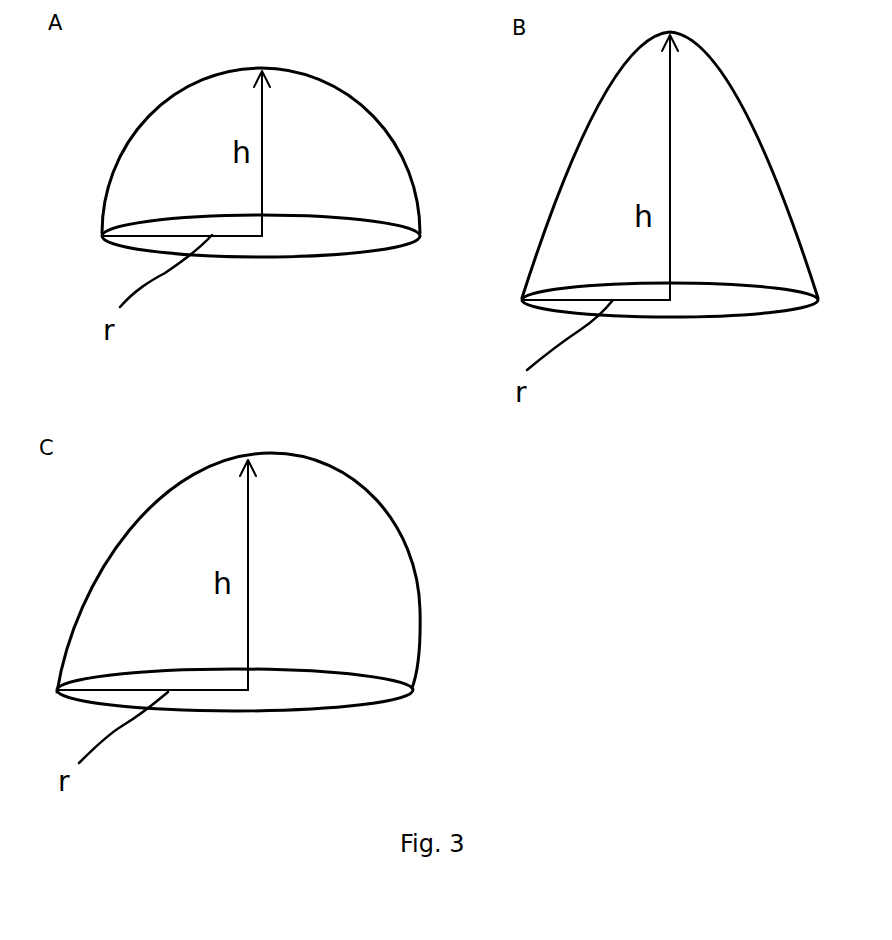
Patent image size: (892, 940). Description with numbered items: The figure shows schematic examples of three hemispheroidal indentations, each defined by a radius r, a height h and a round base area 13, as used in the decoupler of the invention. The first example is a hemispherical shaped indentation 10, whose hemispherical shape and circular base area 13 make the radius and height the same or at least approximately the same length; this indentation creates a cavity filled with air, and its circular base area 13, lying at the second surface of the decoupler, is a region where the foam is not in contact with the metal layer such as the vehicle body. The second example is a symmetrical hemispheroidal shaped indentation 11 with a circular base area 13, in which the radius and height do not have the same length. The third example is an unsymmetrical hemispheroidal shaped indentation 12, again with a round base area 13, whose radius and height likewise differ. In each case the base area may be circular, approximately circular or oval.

In FIG. 3A, the hemispherical shaped indentation 10 is at (370, 97).
In FIG. 3B, the symmetrical hemispheroidal shaped indentation 11 is at (763, 127).
In FIG. 3C, the unsymmetrical hemispheroidal shaped indentation 12 is at (391, 495).
In FIG. 3A, the circular base area 13 is at (290, 227).
In FIG. 3B, the circular base area 13 is at (708, 302).
In FIG. 3C, the circular base area 13 is at (280, 690).